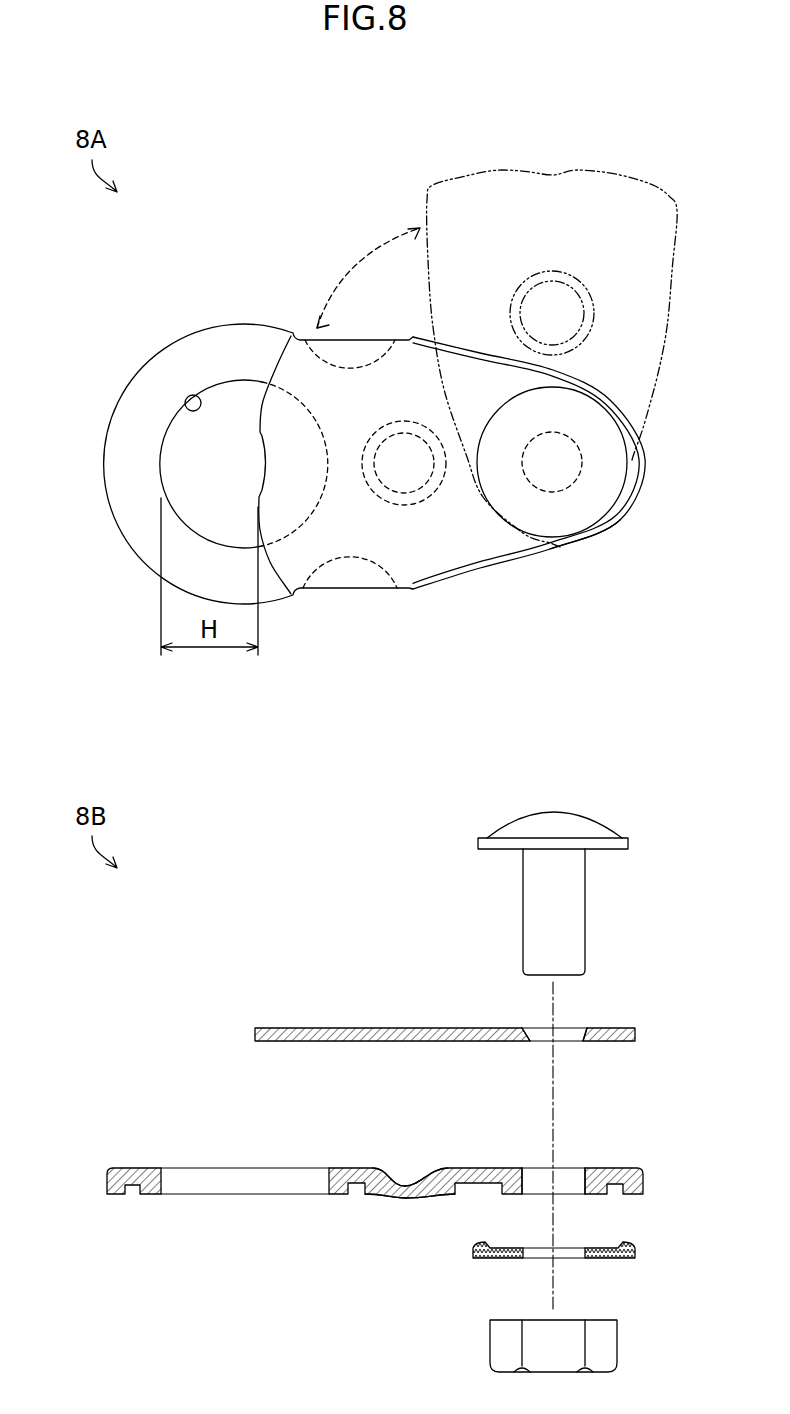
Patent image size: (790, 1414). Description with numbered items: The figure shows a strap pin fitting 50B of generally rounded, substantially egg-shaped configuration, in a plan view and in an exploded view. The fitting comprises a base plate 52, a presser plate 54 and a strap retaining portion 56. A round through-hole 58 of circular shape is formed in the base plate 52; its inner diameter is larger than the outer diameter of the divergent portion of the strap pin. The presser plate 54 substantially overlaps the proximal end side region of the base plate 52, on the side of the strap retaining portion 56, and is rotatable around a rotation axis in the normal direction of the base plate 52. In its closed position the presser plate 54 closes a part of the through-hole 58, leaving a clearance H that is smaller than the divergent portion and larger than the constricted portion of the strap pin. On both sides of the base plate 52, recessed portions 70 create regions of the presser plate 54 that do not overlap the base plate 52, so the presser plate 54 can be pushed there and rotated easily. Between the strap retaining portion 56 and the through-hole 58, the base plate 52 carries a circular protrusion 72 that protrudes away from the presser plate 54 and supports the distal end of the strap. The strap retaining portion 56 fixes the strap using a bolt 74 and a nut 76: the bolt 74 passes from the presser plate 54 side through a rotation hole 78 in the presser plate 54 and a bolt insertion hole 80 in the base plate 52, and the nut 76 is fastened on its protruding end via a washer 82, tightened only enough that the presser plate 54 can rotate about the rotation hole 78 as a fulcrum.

The strap pin fitting 50B is at (355, 201).
The base plate 52 is at (107, 461).
The presser plate 54 is at (487, 553).
The strap retaining portion 56 is at (581, 549).
The through-hole 58 is at (185, 398).
The recessed portions 70 is at (360, 368).
The protrusion 72 is at (404, 464).
The bolt 74 is at (603, 477).
The nut 76 is at (612, 1344).
The rotation hole 78 is at (528, 1030).
The bolt insertion hole 80 is at (581, 1176).
The washer 82 is at (637, 1252).